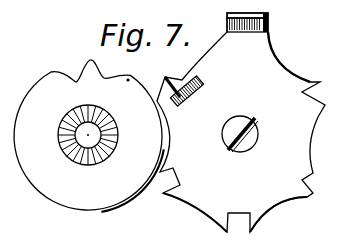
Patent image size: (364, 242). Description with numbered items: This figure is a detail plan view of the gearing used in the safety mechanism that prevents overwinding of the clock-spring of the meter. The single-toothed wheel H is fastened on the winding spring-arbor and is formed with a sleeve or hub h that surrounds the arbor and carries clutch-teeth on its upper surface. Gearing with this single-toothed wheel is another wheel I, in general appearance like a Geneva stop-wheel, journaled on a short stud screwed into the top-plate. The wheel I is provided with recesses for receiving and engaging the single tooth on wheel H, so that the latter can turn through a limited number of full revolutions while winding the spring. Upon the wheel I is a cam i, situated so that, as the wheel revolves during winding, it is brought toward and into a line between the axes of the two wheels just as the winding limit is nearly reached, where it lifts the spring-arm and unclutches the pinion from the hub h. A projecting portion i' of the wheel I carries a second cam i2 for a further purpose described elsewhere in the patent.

The single-toothed wheel H is at (89, 136).
The hub h is at (119, 138).
The wheel I is at (241, 122).
The cam i is at (191, 91).
The projecting portion i' is at (247, 31).
The second cam i2 is at (246, 22).